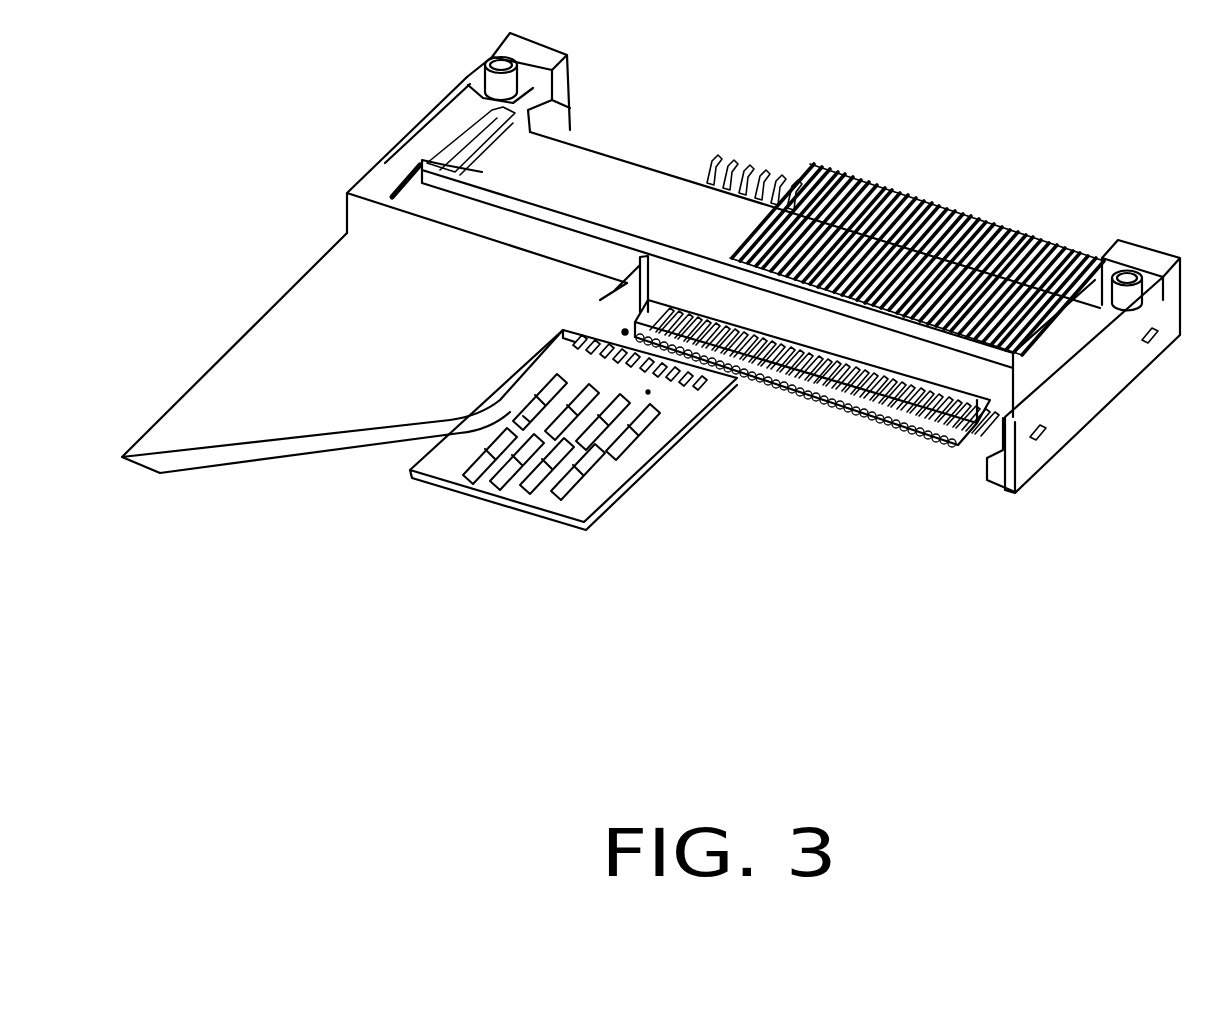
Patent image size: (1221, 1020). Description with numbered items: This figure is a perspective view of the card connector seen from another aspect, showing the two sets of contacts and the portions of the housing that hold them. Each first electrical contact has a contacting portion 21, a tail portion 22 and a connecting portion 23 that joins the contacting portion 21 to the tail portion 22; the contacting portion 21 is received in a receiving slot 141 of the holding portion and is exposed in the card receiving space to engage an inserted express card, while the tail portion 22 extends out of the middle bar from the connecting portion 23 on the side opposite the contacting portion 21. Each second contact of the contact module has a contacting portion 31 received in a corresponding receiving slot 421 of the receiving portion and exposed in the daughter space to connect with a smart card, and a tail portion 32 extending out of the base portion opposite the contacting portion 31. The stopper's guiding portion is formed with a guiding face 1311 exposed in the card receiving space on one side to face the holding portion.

The contacting portion 21 is at (840, 383).
The tail portion 22 is at (972, 300).
The connecting portion 23 is at (965, 300).
The contacting portion 31 is at (590, 425).
The tail portion 32 is at (748, 160).
The receiving slot 141 is at (953, 437).
The receiving slot 421 is at (395, 472).
The guiding face 1311 is at (533, 380).